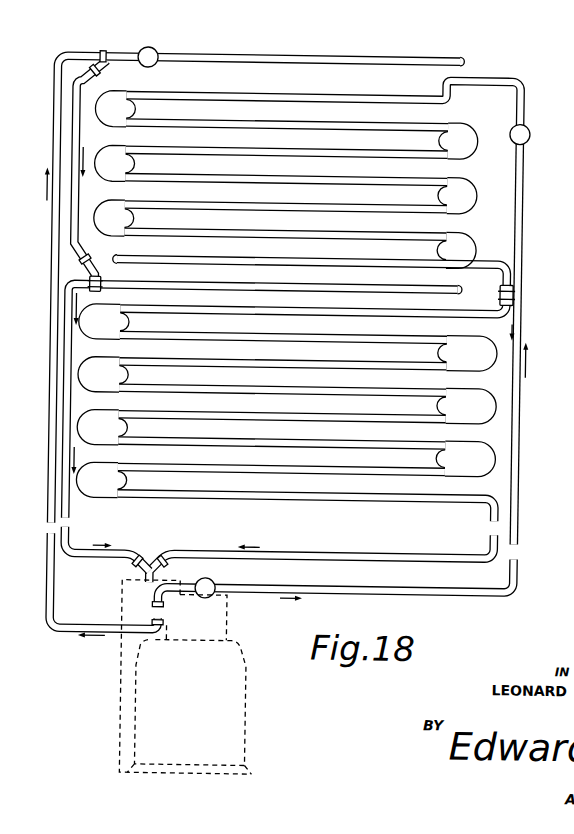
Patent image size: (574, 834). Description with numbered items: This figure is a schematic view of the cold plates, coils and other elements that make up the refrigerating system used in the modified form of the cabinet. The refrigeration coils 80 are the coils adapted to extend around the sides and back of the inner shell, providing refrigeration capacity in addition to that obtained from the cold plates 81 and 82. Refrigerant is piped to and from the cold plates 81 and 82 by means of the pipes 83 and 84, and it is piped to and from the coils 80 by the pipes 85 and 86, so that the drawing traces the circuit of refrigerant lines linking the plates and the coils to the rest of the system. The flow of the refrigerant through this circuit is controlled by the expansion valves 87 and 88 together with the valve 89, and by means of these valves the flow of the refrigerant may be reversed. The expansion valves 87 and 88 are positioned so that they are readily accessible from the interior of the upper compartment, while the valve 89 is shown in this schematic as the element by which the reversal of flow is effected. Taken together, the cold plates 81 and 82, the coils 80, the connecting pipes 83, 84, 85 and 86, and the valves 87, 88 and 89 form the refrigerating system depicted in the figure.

The refrigeration coils 80 is at (186, 238).
The cold plate 81 is at (363, 59).
The cold plate 82 is at (379, 284).
The pipe 83 is at (50, 456).
The pipe 84 is at (68, 501).
The pipe 85 is at (525, 511).
The pipe 86 is at (383, 548).
The expansion valve 87 is at (146, 50).
The expansion valve 88 is at (527, 125).
The valve 89 is at (220, 582).